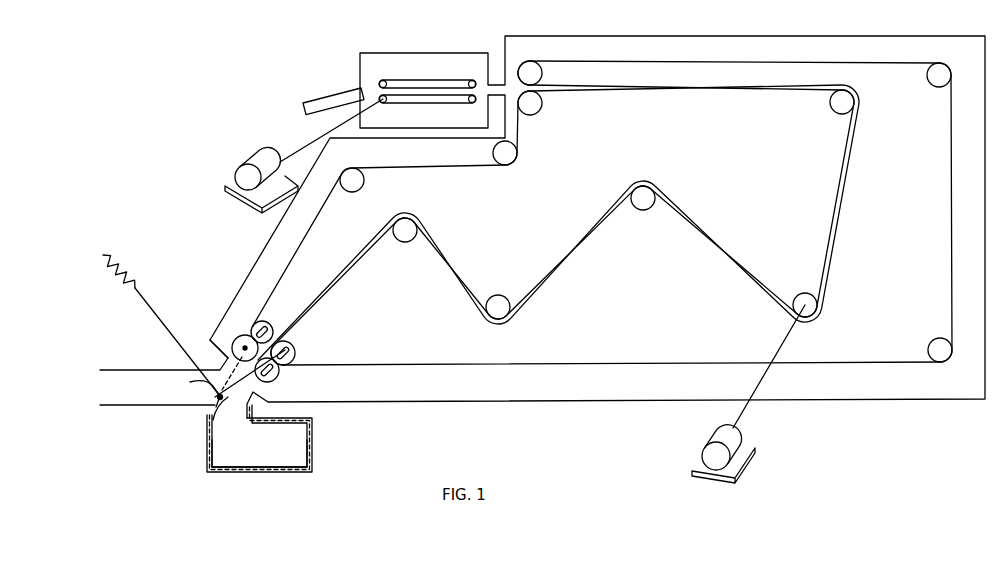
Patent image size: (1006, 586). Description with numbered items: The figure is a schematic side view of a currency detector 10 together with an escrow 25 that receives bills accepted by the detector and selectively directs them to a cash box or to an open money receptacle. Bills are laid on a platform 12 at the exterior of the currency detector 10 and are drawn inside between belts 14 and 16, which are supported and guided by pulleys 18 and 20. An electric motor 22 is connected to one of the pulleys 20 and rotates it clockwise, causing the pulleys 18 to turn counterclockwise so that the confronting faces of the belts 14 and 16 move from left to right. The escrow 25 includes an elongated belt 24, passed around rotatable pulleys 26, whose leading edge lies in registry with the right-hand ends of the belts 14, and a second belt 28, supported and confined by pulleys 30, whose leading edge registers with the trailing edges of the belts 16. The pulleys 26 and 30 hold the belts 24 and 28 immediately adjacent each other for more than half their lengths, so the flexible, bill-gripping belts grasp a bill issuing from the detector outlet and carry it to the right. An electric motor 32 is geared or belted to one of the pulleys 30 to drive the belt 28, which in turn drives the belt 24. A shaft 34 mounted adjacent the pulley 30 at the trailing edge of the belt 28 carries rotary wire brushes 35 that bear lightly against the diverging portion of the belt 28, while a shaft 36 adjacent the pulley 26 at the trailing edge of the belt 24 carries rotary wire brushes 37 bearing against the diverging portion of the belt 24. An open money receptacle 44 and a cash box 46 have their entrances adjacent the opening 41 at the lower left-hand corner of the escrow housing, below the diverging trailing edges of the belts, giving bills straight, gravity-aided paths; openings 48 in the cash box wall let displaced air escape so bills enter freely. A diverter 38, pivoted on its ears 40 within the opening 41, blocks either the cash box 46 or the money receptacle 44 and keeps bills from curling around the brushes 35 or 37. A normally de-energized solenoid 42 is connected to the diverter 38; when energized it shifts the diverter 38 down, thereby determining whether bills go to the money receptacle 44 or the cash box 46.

The currency detector 10 is at (422, 53).
The platform 12 is at (328, 96).
The belts 14 is at (418, 80).
The belts 16 is at (430, 103).
The pulleys 18 is at (383, 81).
The pulleys 20 is at (386, 103).
The electric motor 22 is at (251, 156).
The elongated belt 24 is at (683, 62).
The escrow 25 is at (745, 181).
The rotatable pulleys 26 is at (538, 62).
The second belt 28 is at (732, 92).
The pulleys 30 is at (541, 108).
The electric motor 32 is at (748, 458).
The shaft 34 is at (245, 337).
The rotary wire brushes 35 is at (218, 334).
The shaft 36 is at (280, 369).
The rotary wire brushes 37 is at (276, 383).
The diverter 38 is at (208, 416).
The ears 40 is at (215, 395).
The opening 41 is at (220, 368).
The solenoid 42 is at (132, 261).
The open money receptacle 44 is at (113, 407).
The cash box 46 is at (270, 475).
The openings 48 is at (310, 457).